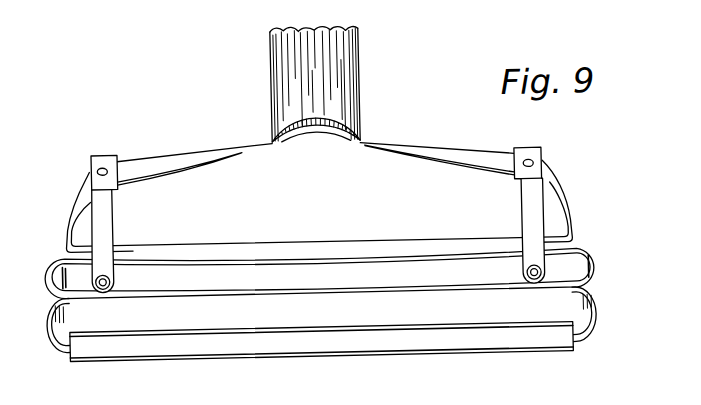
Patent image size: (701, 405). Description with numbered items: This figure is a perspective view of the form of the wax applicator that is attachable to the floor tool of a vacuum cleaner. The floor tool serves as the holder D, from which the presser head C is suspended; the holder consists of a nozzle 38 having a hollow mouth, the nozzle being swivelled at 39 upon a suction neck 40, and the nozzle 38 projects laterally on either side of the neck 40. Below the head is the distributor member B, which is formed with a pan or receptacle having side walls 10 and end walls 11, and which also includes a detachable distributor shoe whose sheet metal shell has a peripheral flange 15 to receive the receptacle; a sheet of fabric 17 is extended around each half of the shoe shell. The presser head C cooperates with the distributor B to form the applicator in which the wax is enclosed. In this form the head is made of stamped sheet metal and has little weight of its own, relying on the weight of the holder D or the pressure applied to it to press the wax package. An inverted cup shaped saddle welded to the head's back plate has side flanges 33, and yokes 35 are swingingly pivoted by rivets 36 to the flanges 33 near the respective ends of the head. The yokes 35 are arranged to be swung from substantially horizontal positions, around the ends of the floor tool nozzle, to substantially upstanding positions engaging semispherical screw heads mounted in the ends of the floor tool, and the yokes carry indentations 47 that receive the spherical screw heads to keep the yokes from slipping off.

The side walls 10 is at (342, 306).
The end walls 11 is at (596, 298).
The peripheral flange 15 is at (594, 326).
The sheet of fabric 17 is at (329, 358).
The side flanges 33 is at (401, 271).
The yokes 35 is at (521, 214).
The rivets 36 is at (525, 276).
The nozzle 38 is at (318, 195).
The swivel 39 is at (367, 141).
The suction neck 40 is at (364, 69).
The indentations 47 is at (536, 168).
The distributor member B is at (325, 307).
The presser head C is at (329, 276).
The holder D is at (273, 71).